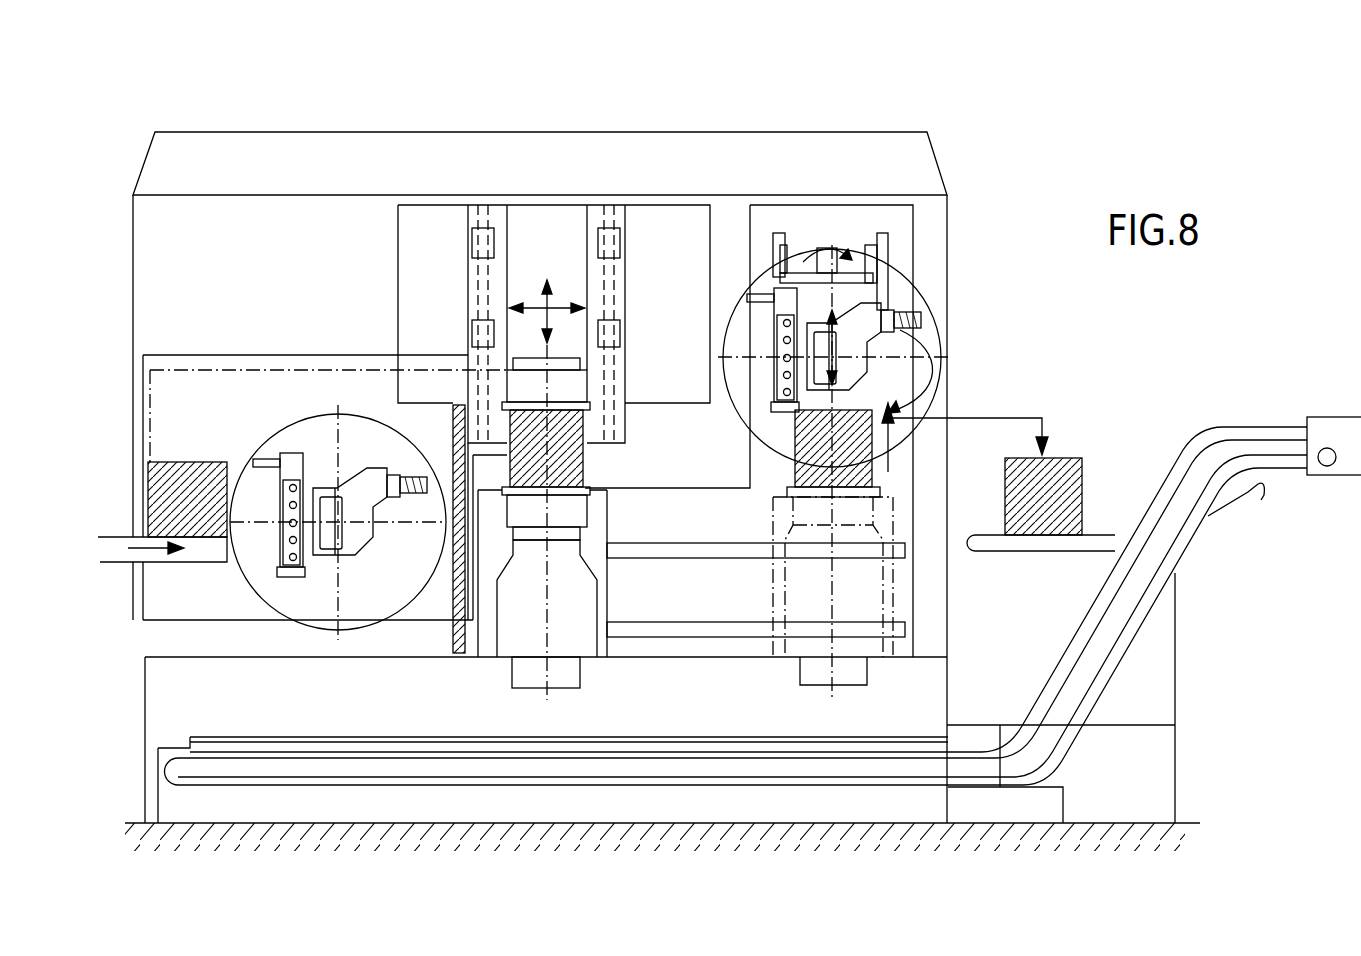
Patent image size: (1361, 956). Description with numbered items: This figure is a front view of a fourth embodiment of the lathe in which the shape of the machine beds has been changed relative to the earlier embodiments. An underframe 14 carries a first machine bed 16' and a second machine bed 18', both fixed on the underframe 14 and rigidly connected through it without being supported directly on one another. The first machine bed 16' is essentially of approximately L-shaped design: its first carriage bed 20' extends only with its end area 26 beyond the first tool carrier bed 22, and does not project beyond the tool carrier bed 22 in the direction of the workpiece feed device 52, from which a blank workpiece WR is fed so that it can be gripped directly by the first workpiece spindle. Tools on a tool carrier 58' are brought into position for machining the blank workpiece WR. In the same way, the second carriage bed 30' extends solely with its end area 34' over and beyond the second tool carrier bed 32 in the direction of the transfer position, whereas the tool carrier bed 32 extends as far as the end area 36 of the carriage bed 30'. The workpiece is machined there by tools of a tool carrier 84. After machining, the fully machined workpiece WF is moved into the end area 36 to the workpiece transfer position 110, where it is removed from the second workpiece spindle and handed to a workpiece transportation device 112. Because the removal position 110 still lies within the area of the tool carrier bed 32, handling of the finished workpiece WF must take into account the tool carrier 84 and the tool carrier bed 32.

The underframe 14 is at (403, 705).
The first machine bed 16' is at (305, 337).
The first carriage bed 20' is at (328, 257).
The first tool carrier bed 22 is at (220, 603).
The end area 26 is at (633, 383).
The second carriage bed 30' is at (756, 721).
The second tool carrier bed 32 is at (928, 232).
The end area 34' is at (573, 622).
The end area 36 is at (903, 595).
The workpiece feed device 52 is at (188, 553).
The tool carrier 58' is at (338, 346).
The tool carrier 84 is at (878, 342).
The workpiece transfer position 110 is at (893, 447).
The workpiece transportation device 112 is at (1028, 543).
The second machine bed 18' is at (923, 440).
The blank workpiece WR is at (170, 498).
The fully machined workpiece WF is at (1083, 487).